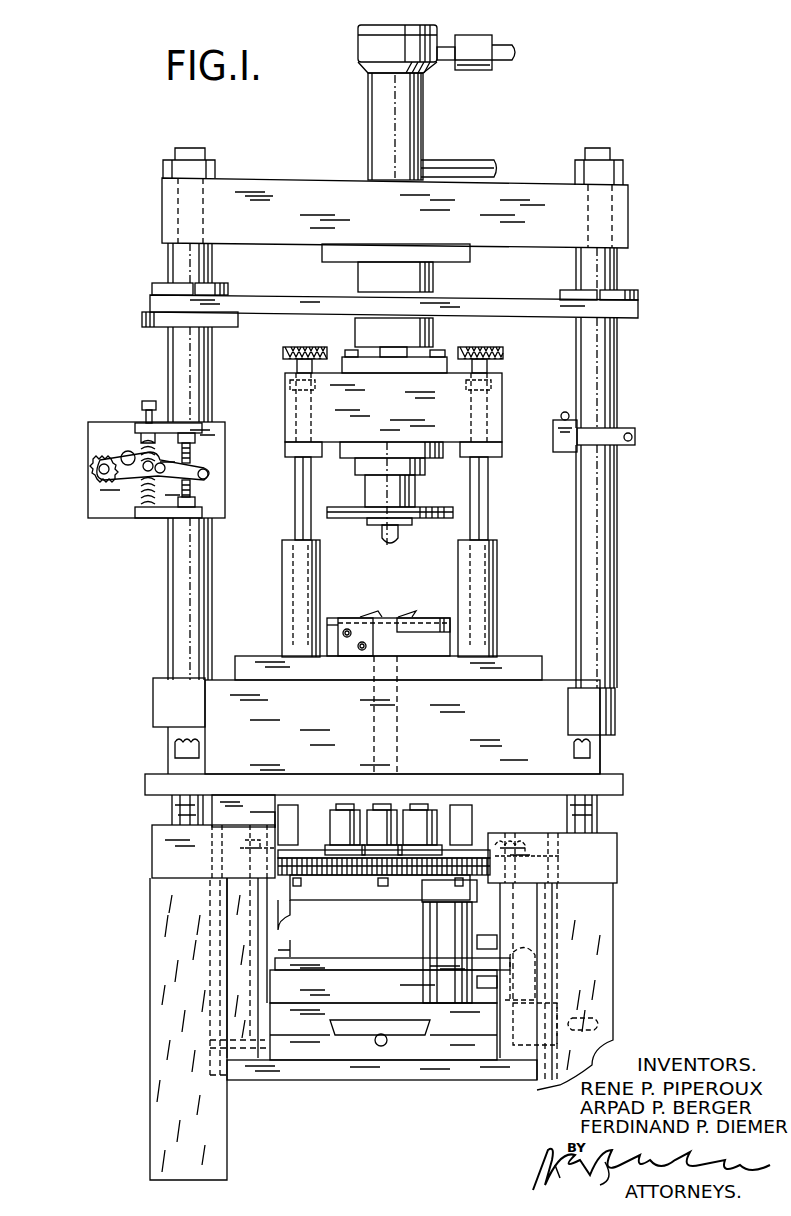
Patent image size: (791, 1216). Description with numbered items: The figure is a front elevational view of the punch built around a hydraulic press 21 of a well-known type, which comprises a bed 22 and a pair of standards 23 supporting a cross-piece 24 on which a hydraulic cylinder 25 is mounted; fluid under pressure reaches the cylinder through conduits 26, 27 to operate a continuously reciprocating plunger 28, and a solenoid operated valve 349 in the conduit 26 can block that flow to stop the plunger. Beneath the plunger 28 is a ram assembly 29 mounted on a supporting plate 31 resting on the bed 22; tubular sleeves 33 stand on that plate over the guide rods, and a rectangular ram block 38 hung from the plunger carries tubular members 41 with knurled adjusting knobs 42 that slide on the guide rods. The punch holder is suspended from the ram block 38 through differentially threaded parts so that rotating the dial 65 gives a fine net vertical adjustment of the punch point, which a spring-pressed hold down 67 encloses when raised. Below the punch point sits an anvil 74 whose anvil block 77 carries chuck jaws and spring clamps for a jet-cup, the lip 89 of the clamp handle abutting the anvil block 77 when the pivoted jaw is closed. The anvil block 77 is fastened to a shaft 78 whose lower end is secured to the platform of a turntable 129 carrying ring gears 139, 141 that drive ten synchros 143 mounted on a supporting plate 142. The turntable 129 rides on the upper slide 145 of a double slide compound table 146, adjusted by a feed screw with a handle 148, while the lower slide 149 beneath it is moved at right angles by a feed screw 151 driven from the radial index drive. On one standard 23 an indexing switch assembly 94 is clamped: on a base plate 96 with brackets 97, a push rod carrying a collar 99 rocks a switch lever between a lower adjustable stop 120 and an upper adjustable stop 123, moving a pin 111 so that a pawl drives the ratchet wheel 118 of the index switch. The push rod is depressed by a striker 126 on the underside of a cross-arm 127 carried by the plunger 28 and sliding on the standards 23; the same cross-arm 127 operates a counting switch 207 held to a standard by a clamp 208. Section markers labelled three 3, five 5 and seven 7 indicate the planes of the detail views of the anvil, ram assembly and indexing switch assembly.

The hydraulic press 21 is at (160, 635).
The bed 22 is at (560, 704).
The standards 23 is at (620, 559).
The cross-piece 24 is at (279, 185).
The hydraulic cylinder 25 is at (370, 120).
The conduit 26 is at (446, 46).
The conduit 27 is at (468, 164).
The plunger 28 is at (398, 358).
The ram assembly 29 is at (503, 540).
The supporting plate 31 is at (530, 663).
The tubular sleeves 33 is at (282, 598).
The ram block 38 is at (498, 424).
The tubular members 41 is at (295, 491).
The knurled adjusting knobs 42 is at (498, 360).
The dial 65 is at (342, 507).
The hold down 67 is at (384, 538).
The anvil 74 is at (388, 612).
The anvil block 77 is at (430, 656).
The shaft 78 is at (398, 730).
The lip 89 is at (410, 632).
The indexing switch assembly 94 is at (82, 477).
The base plate 96 is at (220, 453).
The brackets 97 is at (140, 423).
The collar 99 is at (147, 400).
The pin 111 is at (118, 455).
The ratchet wheel 118 is at (102, 480).
The lower adjustable stop 120 is at (192, 495).
The upper adjustable stop 123 is at (192, 449).
The striker 126 is at (152, 326).
The cross-arm 127 is at (478, 308).
The turntable 129 is at (480, 914).
The ring gear 139 is at (360, 876).
The ring gear 141 is at (325, 868).
The supporting plate 142 is at (230, 853).
The synchros 143 is at (330, 819).
The upper slide 145 is at (330, 970).
The double slide compound table 146 is at (365, 1085).
The handle 148 is at (588, 1018).
The lower slide 149 is at (302, 1050).
The feed screw 151 is at (387, 1041).
The switch 207 is at (565, 452).
The clamp 208 is at (600, 440).
The solenoid operated valve 349 is at (476, 68).
The section line 3 is at (333, 581).
The section line 5 is at (268, 320).
The section line 7 is at (91, 272).